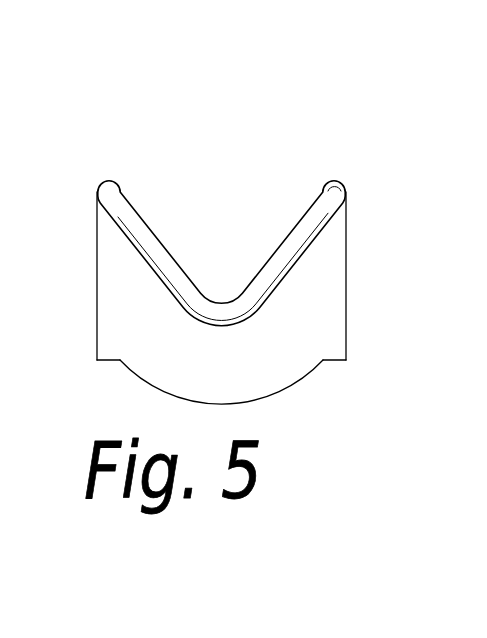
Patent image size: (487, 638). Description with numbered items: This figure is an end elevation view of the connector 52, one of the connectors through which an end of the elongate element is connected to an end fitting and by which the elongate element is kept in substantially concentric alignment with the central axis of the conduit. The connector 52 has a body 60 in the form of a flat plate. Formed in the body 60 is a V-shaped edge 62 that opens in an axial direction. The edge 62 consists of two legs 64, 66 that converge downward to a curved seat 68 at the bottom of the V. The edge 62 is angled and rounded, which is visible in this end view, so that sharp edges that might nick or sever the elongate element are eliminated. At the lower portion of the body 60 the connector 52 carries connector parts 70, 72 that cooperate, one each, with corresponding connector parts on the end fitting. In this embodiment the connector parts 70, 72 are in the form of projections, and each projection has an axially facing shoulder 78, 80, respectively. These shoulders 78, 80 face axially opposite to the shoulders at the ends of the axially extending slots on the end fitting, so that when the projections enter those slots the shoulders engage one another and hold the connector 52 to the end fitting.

The connector 52 is at (249, 250).
The body 60 is at (249, 302).
The V-shaped edge 62 is at (247, 189).
The leg 64 is at (318, 194).
The leg 66 is at (130, 197).
The curved seat 68 is at (212, 302).
The connector part 70 is at (346, 313).
The connector part 72 is at (97, 251).
The axially facing shoulder 78 is at (335, 362).
The axially facing shoulder 80 is at (105, 362).